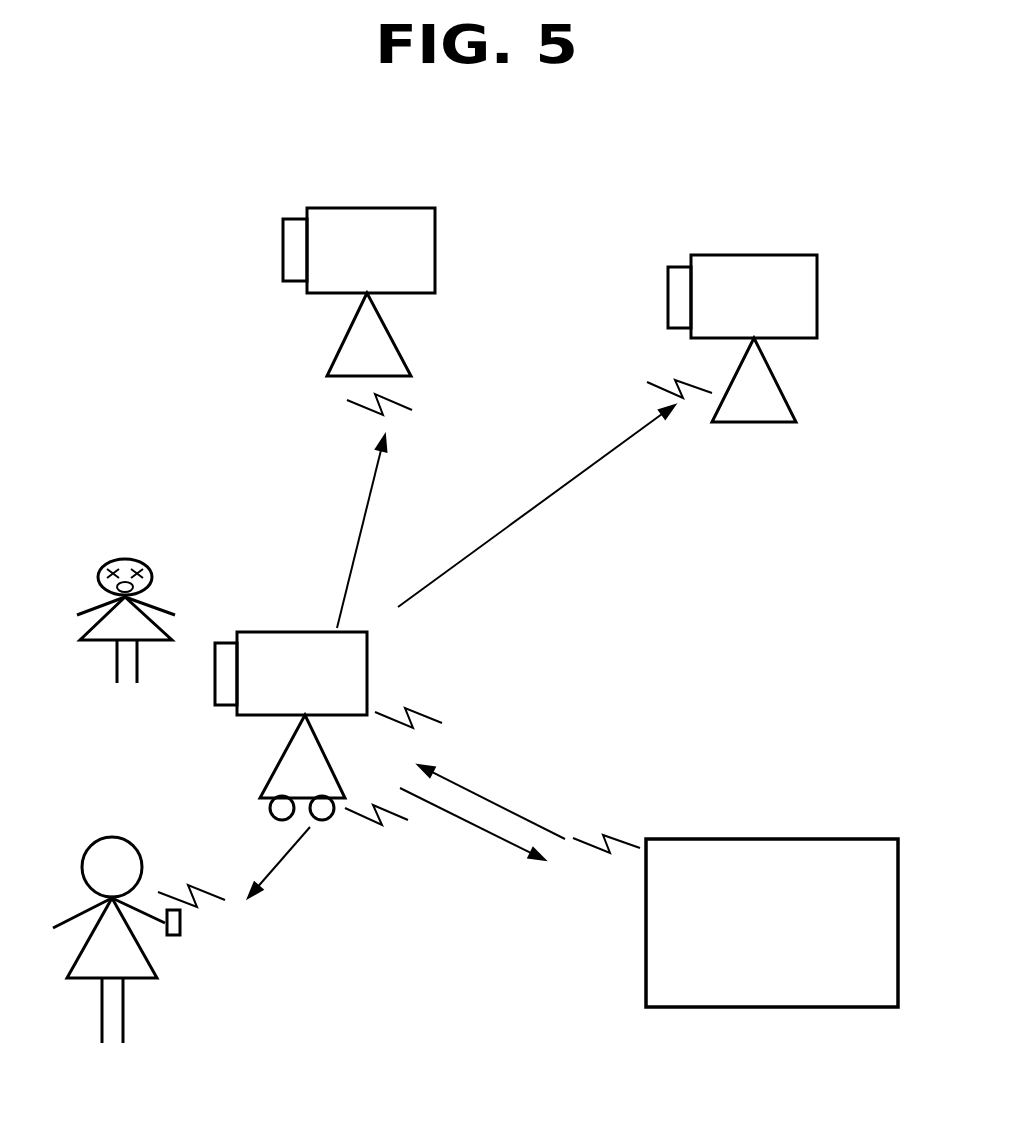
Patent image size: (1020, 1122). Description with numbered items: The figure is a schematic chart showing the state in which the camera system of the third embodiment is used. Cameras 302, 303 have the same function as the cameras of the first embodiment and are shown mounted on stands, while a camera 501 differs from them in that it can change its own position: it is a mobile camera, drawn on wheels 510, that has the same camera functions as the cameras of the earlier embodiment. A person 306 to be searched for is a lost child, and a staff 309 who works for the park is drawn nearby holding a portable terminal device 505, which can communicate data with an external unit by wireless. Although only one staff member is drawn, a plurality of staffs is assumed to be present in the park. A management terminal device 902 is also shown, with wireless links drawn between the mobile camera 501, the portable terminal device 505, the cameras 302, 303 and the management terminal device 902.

The camera 302 is at (369, 208).
The camera 303 is at (753, 255).
The camera 501 is at (282, 632).
The wheels / moving mechanism 510 is at (268, 808).
The person 306 is at (124, 559).
The staff 309 is at (112, 837).
The portable terminal 505 is at (181, 922).
The management terminal device 902 is at (773, 839).